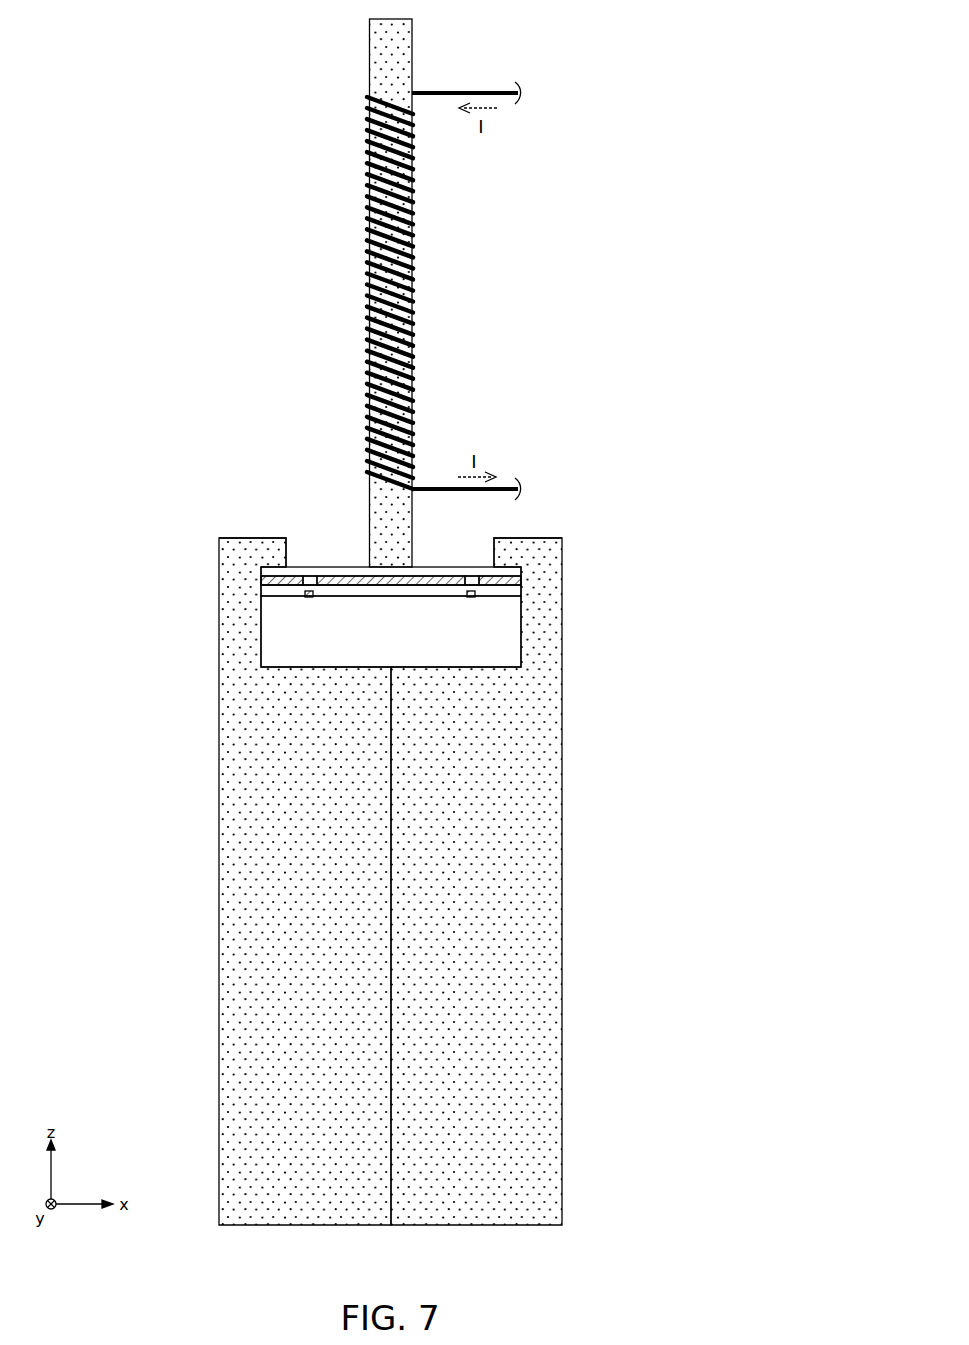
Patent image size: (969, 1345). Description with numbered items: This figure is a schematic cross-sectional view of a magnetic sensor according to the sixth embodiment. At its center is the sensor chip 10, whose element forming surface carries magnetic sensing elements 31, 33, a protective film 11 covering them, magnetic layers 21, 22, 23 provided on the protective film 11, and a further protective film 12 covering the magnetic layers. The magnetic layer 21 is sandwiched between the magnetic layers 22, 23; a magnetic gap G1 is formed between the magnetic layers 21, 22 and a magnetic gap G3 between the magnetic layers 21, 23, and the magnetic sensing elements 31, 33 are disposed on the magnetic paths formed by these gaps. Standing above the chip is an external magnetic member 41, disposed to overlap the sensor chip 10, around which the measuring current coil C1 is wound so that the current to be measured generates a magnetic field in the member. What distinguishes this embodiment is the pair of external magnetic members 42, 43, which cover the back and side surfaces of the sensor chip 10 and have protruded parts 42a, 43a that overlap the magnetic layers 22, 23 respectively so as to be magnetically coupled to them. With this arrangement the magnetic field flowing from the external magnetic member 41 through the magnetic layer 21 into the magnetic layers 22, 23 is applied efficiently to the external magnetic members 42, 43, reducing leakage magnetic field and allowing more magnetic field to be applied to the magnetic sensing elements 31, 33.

The sensor chip 10 is at (510, 633).
The protective film 11 is at (510, 592).
The protective film 12 is at (523, 572).
The magnetic layer 21 is at (335, 577).
The magnetic layer 22 is at (283, 577).
The magnetic layer 23 is at (497, 577).
The magnetic sensing element 31 is at (309, 600).
The magnetic sensing element 33 is at (471, 600).
The external magnetic member 41 is at (386, 53).
The external magnetic member 42 is at (258, 1020).
The external magnetic member 43 is at (535, 1017).
The protruded part 42a is at (237, 548).
The protruded part 43a is at (549, 546).
The measuring current coil C1 is at (368, 318).
The magnetic gap G1 is at (314, 560).
The magnetic gap G3 is at (468, 560).